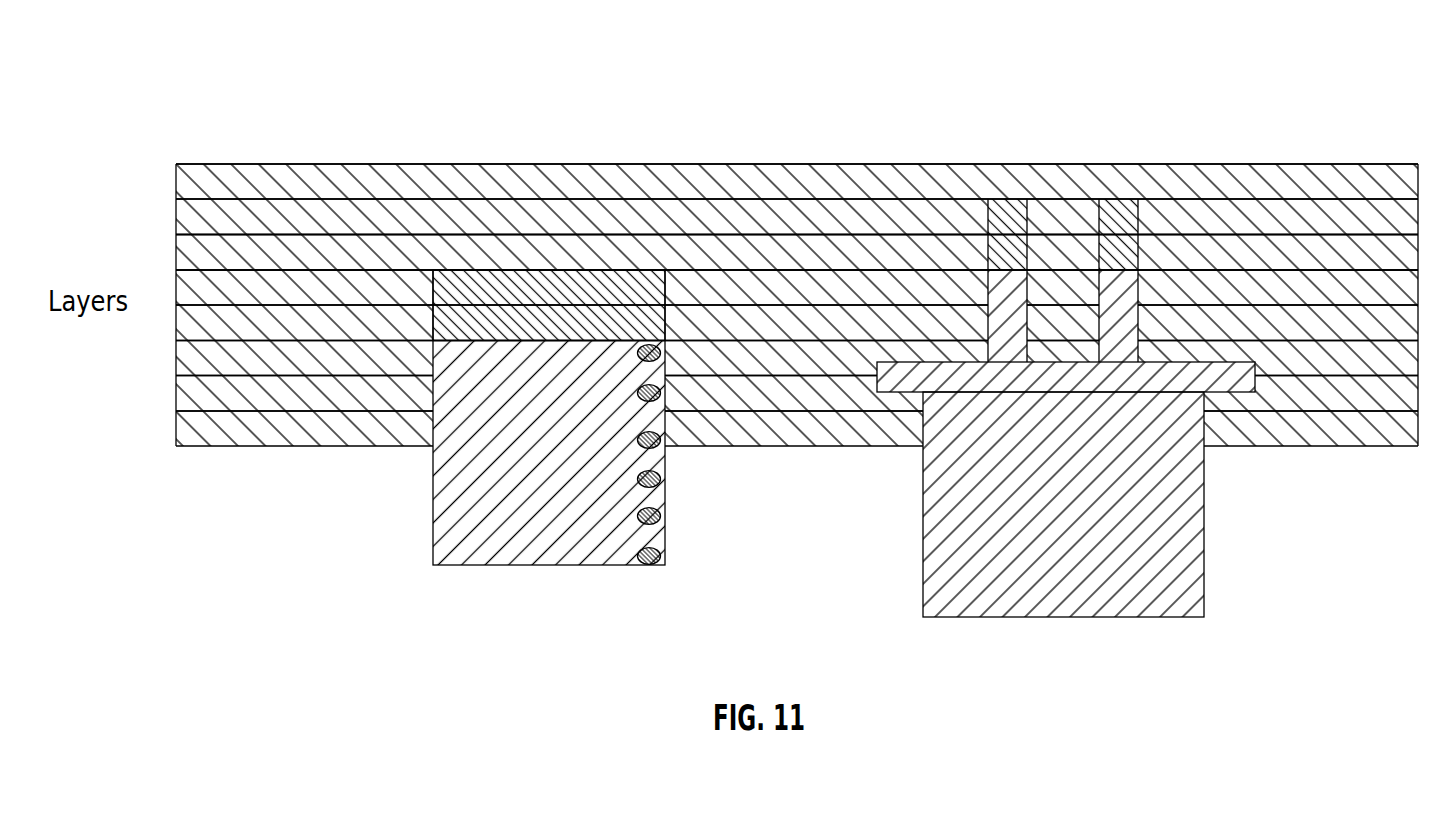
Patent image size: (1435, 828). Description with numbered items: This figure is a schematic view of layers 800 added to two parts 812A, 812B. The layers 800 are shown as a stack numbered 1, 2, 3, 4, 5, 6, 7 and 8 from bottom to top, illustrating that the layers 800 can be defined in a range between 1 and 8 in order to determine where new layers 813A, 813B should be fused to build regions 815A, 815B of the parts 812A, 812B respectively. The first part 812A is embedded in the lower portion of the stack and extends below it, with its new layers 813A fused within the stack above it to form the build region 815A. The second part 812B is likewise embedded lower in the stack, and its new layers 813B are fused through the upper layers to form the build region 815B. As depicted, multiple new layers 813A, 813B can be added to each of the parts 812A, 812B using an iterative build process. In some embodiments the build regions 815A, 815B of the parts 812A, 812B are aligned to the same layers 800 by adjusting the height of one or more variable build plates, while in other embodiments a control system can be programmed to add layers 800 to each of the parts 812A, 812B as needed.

The layers 800 is at (219, 50).
The part 812A is at (422, 510).
The part 812B is at (936, 512).
The new layers 813A is at (562, 258).
The new layers 813B is at (1088, 246).
The build region 815A is at (499, 355).
The build region 815B is at (1123, 285).
The layer range lower bound 1 is at (783, 428).
The layer 2 is at (783, 394).
The layer 3 is at (783, 358).
The layer 4 is at (783, 323).
The layer 5 is at (783, 287).
The layer 6 is at (783, 253).
The layer 7 is at (783, 217).
The layer range upper bound 8 is at (783, 181).